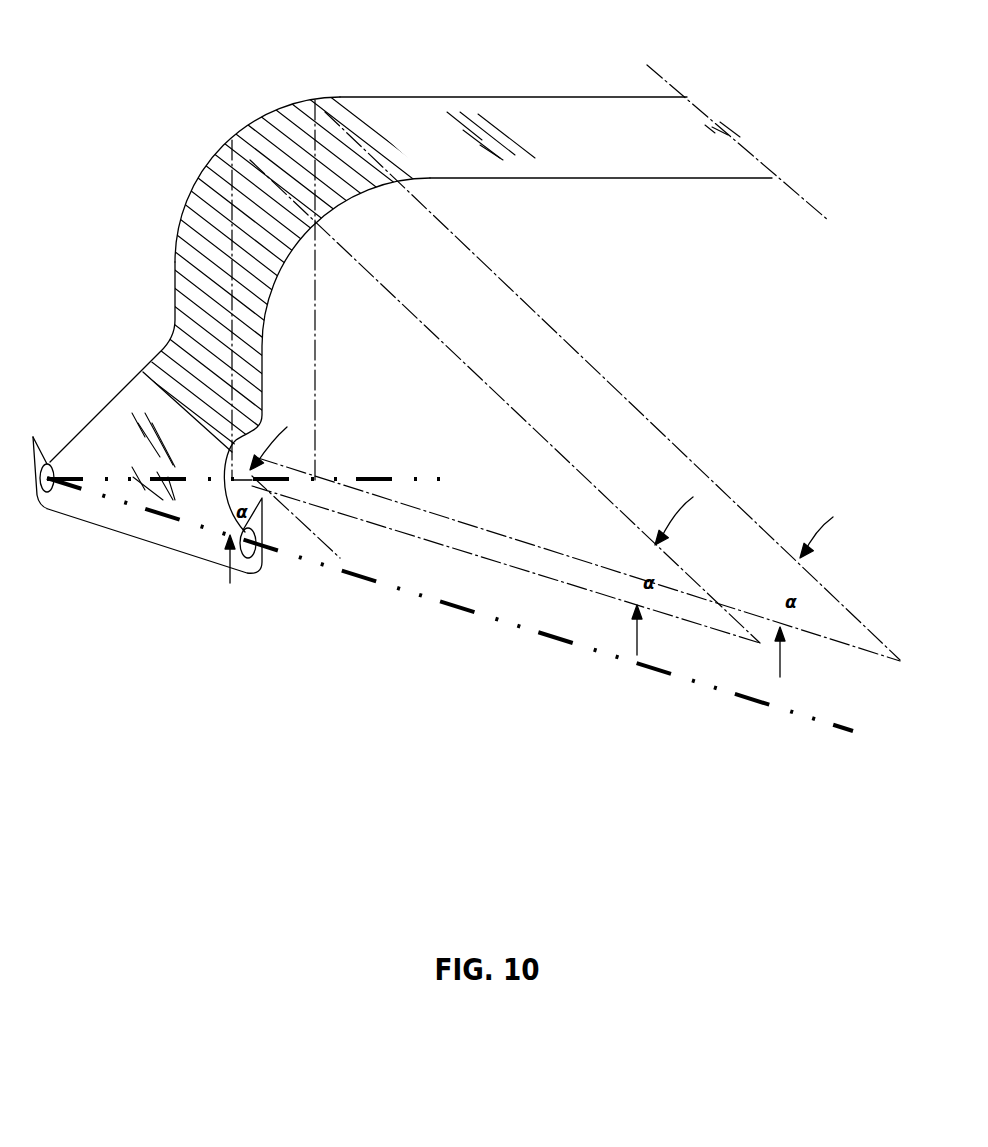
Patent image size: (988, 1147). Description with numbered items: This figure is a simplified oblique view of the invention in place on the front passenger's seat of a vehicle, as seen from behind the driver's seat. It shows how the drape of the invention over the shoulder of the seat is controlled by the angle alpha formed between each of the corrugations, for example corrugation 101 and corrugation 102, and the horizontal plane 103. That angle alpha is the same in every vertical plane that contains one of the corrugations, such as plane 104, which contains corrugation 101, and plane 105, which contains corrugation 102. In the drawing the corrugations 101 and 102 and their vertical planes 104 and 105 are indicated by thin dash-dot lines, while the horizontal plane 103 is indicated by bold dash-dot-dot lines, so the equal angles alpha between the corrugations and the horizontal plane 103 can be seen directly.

The corrugation 101 is at (253, 165).
The corrugation 102 is at (340, 124).
The horizontal plane 103 is at (423, 595).
The vertical plane 104 is at (500, 395).
The vertical plane 105 is at (500, 275).